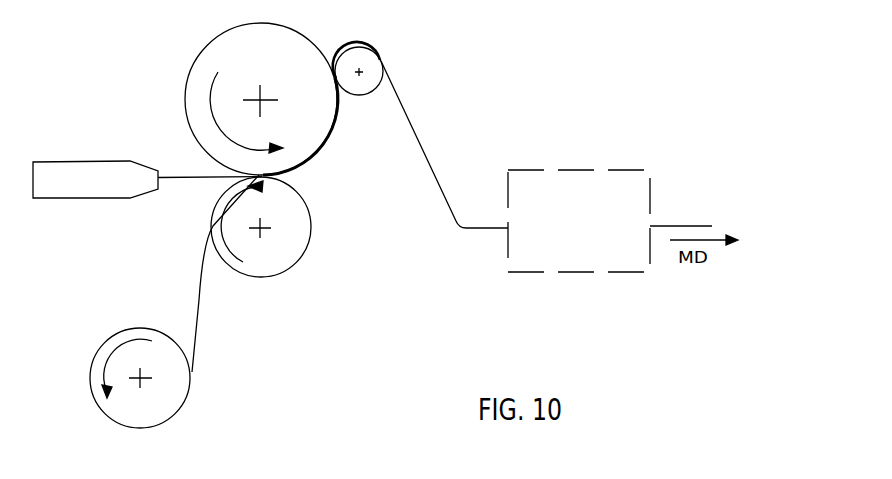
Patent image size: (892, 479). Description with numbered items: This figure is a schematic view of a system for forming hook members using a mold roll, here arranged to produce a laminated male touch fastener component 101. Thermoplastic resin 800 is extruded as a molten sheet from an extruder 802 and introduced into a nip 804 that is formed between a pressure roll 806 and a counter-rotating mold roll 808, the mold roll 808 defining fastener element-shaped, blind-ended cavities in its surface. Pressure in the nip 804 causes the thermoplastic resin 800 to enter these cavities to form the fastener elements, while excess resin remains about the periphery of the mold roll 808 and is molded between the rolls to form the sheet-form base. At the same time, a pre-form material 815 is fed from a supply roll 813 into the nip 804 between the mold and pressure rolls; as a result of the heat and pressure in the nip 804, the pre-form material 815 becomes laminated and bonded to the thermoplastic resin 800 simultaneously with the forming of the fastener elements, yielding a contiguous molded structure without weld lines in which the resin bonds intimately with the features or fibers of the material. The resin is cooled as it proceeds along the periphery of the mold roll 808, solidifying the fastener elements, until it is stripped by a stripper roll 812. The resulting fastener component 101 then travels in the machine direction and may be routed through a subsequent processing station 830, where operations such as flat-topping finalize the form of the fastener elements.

The laminated male touch fastener component 101 is at (655, 219).
The thermoplastic resin 800 is at (193, 178).
The extruder 802 is at (88, 160).
The nip 804 is at (298, 178).
The pressure roll 806 is at (308, 243).
The mold roll 808 is at (278, 66).
The stripper roll 812 is at (357, 96).
The supply roll 813 is at (107, 343).
The pre-form material 815 is at (198, 313).
The subsequent processing station 830 is at (562, 170).